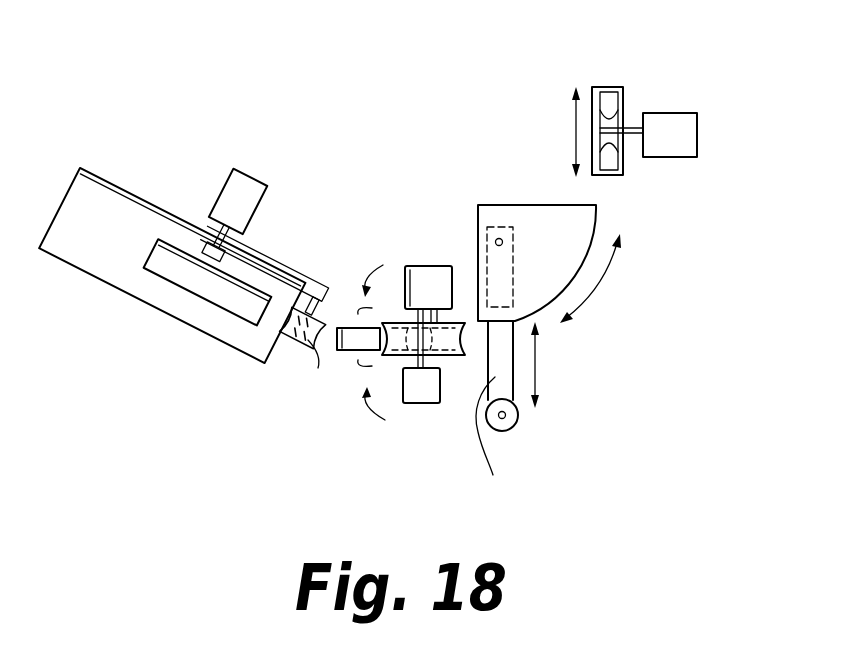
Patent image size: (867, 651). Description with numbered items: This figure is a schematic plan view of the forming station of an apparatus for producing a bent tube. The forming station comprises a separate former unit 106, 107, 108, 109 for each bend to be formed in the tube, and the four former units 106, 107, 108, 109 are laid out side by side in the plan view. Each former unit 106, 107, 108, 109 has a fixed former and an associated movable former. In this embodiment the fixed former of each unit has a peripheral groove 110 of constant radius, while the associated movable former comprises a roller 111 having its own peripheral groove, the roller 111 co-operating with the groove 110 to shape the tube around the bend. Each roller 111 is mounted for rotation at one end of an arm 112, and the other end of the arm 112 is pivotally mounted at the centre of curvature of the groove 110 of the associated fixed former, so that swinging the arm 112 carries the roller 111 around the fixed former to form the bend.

The former unit 106 is at (274, 236).
The former unit 107 is at (424, 432).
The former unit 108 is at (619, 343).
The former unit 109 is at (652, 90).
The peripheral groove 110 is at (200, 280).
The roller 111 is at (300, 343).
The arm 112 is at (318, 365).